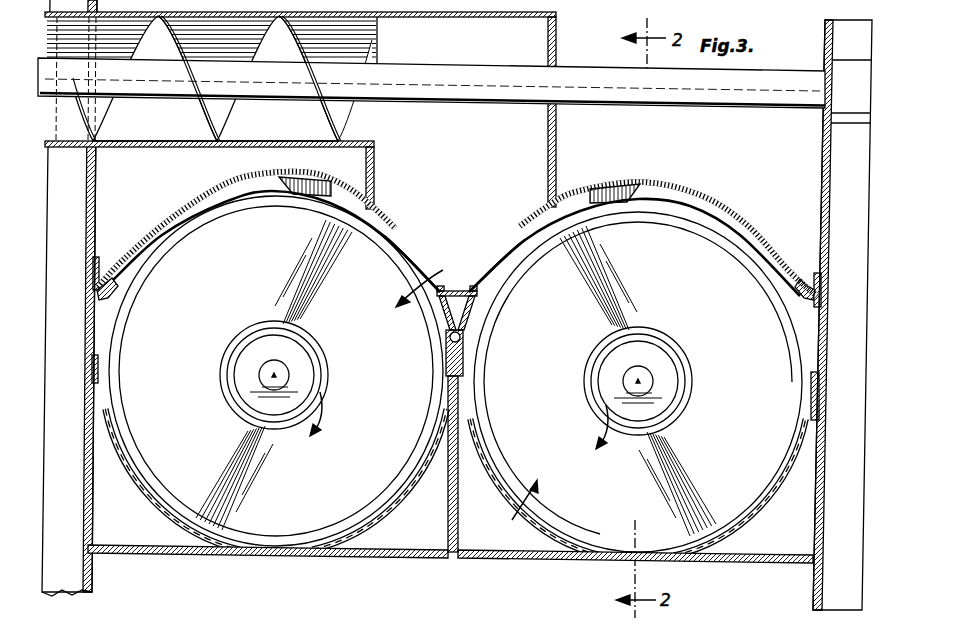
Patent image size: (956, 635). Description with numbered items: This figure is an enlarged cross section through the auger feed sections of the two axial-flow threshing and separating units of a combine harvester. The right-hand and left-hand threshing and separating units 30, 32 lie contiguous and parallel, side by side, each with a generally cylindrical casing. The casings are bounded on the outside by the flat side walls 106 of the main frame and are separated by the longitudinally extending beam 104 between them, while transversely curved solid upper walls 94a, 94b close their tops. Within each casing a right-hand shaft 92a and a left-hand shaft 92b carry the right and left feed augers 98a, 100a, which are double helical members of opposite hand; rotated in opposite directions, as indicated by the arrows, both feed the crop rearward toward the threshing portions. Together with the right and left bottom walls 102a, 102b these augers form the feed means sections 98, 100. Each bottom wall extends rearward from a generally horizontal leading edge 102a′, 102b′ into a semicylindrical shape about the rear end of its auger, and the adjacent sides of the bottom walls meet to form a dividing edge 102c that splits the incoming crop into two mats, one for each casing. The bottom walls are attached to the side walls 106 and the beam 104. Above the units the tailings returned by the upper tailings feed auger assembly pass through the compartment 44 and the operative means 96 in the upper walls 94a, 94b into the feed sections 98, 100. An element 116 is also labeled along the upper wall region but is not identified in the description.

The right-hand threshing and separating unit 30 is at (268, 397).
The left-hand threshing and separating unit 32 is at (635, 409).
The compartment 44 is at (318, 110).
The right-hand shaft 92a is at (326, 378).
The left-hand shaft 92b is at (690, 382).
The right upper wall 94a is at (164, 214).
The left upper wall 94b is at (663, 184).
The operative means 96 is at (412, 250).
The right feed means section 98 is at (431, 278).
The right feed auger 98a is at (334, 481).
The left feed means section 100 is at (494, 558).
The left feed auger 100a is at (760, 459).
The right bottom wall 102a is at (138, 522).
The leading edge of right bottom wall 102a′ is at (215, 550).
The left bottom wall 102b is at (486, 560).
The leading edge of left bottom wall 102b′ is at (556, 566).
The dividing edge 102c is at (460, 486).
The longitudinally extending beam 104 is at (470, 318).
The side walls 106 is at (92, 318).
The shroud liner 116 is at (204, 202).